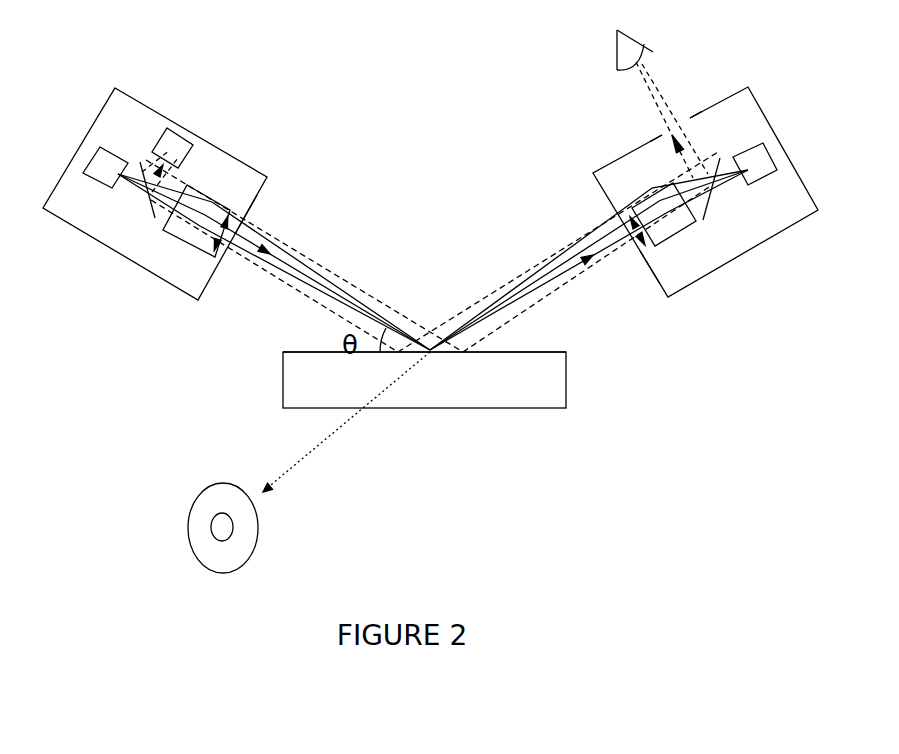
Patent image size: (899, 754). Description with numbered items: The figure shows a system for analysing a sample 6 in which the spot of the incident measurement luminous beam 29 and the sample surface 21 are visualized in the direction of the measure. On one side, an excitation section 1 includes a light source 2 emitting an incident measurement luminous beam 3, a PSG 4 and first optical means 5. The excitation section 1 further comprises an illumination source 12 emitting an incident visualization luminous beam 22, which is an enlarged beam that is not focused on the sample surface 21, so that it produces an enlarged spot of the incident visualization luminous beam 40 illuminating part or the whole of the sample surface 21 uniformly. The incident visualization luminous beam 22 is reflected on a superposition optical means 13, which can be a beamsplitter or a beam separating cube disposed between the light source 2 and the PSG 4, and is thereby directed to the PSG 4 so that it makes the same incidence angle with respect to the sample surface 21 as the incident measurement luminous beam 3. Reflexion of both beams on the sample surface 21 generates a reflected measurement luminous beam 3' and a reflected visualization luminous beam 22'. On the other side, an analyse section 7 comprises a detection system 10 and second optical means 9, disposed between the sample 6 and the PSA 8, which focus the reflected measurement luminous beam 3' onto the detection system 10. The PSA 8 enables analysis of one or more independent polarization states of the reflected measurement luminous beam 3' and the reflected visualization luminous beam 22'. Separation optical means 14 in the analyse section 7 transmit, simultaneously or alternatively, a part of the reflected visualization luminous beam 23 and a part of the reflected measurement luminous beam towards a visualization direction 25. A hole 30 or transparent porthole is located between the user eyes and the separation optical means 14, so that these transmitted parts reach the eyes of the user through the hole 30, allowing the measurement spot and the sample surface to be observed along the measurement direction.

The excitation section 1 is at (135, 100).
The light source 2 is at (88, 163).
The incident measurement luminous beam 3 is at (274, 262).
The reflected measurement luminous beam 3' is at (589, 260).
The PSG 4 is at (200, 190).
The first optical means 5 is at (247, 213).
The sample 6 is at (553, 409).
The analyse section 7 is at (795, 223).
The PSA 8 is at (642, 197).
The second optical means 9 is at (650, 272).
The detection system 10 is at (762, 137).
The illumination source 12 is at (173, 127).
The superposition optical means 13 is at (154, 222).
The separation optical means 14 is at (704, 221).
The sample surface 21 is at (518, 352).
The incident visualization luminous beam 22 is at (304, 256).
The reflected visualization luminous beam 22' is at (558, 252).
The part of the reflected visualization luminous beam 23 is at (663, 97).
The visualization direction 25 is at (690, 115).
The spot of the incident measurement luminous beam 29 is at (212, 520).
The hole 30 is at (645, 132).
The spot of the incident visualization luminous beam 40 is at (258, 532).